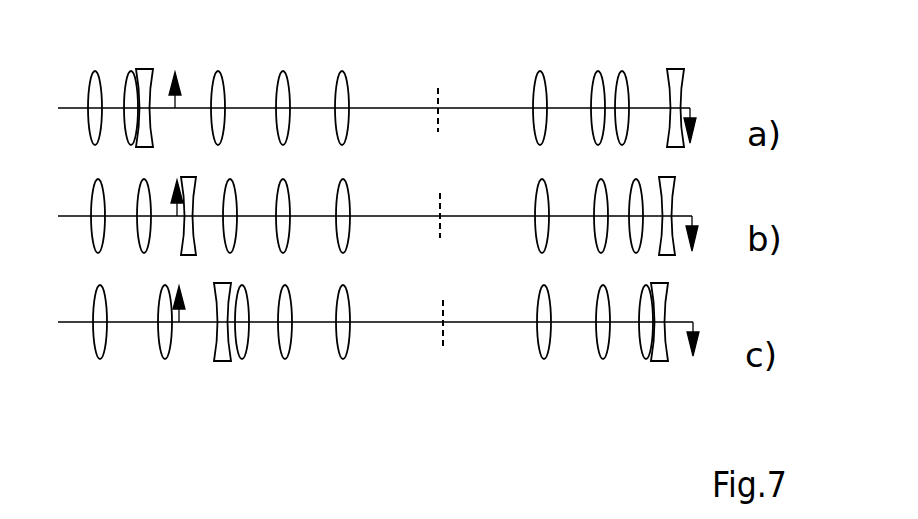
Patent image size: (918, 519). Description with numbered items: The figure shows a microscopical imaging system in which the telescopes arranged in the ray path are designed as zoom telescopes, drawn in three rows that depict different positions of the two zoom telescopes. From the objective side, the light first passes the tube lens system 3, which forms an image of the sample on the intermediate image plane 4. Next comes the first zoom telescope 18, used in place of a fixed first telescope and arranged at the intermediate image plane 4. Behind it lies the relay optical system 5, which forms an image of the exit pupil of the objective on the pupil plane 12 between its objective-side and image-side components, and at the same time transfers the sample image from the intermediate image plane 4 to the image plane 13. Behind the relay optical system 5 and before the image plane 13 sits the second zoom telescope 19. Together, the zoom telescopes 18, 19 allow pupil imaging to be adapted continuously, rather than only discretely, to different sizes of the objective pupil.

The tube lens system 3 is at (113, 390).
The intermediate image plane 4 is at (168, 97).
The relay optical system 5 is at (274, 390).
The pupil plane 12 is at (440, 88).
The image plane 13 is at (697, 118).
The first zoom telescope 18 is at (123, 390).
The second zoom telescope 19 is at (613, 390).